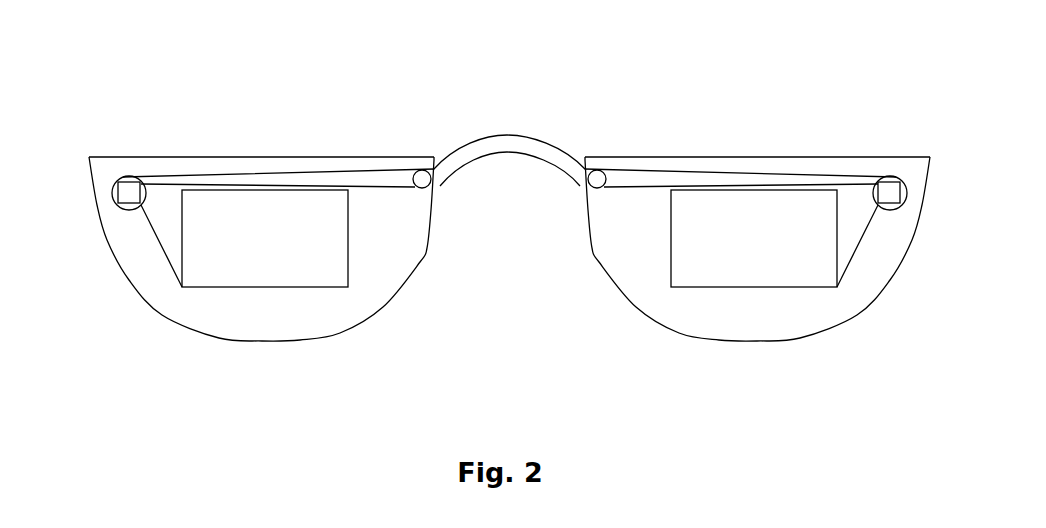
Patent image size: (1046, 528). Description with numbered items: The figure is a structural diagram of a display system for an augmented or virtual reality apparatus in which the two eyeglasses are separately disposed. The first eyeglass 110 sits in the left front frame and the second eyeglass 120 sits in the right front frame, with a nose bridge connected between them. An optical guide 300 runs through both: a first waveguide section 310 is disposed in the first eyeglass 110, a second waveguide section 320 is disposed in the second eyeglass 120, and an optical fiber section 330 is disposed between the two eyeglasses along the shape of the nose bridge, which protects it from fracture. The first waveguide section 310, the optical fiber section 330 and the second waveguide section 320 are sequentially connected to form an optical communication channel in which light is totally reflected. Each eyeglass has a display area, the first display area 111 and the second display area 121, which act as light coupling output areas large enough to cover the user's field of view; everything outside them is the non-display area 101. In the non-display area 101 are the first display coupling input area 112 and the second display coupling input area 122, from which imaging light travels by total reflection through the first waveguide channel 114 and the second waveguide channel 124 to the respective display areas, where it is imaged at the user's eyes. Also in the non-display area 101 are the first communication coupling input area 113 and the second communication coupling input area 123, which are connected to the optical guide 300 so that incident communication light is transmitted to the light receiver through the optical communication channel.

The non-display area 101 is at (402, 253).
The first eyeglass 110 is at (357, 328).
The first display area 111 is at (278, 265).
The first display coupling input area 112 is at (126, 199).
The first communication coupling input area 113 is at (122, 177).
The first waveguide channel 114 is at (174, 226).
The second eyeglass 120 is at (798, 338).
The second display area 121 is at (760, 257).
The second display coupling input area 122 is at (893, 196).
The second communication coupling input area 123 is at (890, 176).
The second waveguide channel 124 is at (847, 226).
The optical guide 300 is at (327, 65).
The first waveguide section 310 is at (323, 178).
The second waveguide section 320 is at (687, 178).
The optical fiber section 330 is at (507, 145).